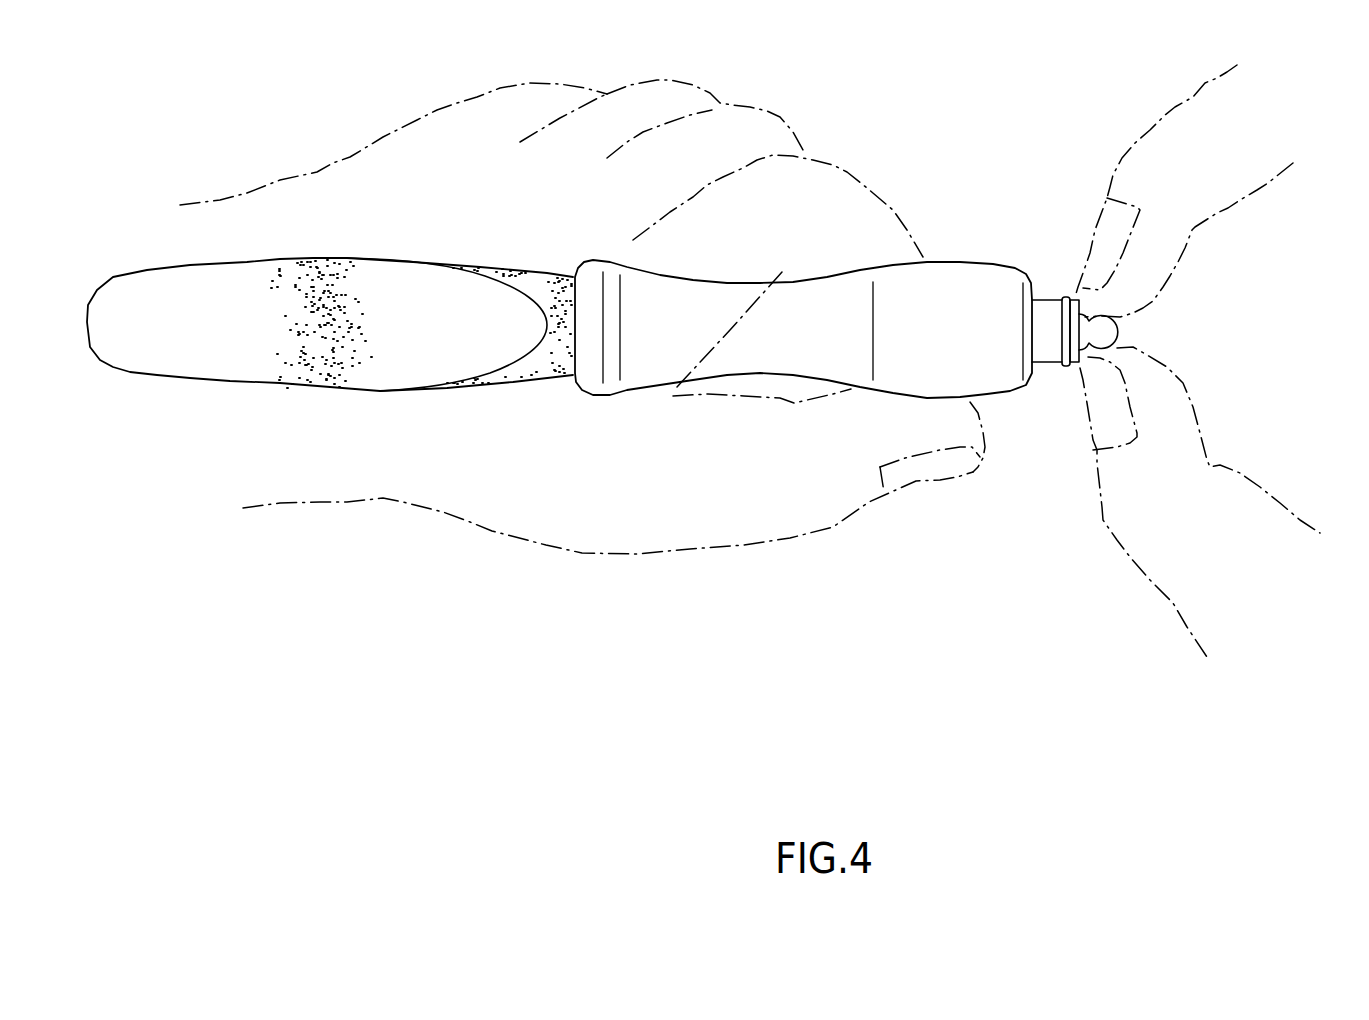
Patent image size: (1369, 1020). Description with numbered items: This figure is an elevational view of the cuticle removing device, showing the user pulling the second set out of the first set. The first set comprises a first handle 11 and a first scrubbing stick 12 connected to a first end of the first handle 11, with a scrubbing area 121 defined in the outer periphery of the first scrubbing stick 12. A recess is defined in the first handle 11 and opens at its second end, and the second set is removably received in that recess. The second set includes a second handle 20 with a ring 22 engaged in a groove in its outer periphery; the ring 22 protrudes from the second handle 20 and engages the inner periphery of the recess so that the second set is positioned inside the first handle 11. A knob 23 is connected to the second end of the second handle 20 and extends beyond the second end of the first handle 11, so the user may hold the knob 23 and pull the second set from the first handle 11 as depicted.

The first handle 11 is at (962, 272).
The first scrubbing stick 12 is at (522, 392).
The scrubbing area 121 is at (207, 275).
The second handle 20 is at (1047, 350).
The ring 22 is at (1065, 297).
The knob 23 is at (1108, 328).